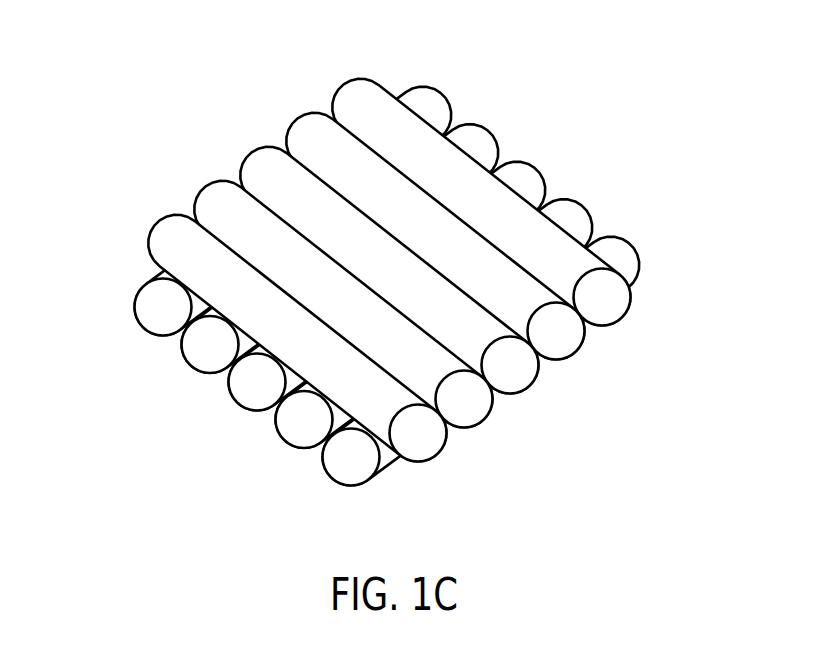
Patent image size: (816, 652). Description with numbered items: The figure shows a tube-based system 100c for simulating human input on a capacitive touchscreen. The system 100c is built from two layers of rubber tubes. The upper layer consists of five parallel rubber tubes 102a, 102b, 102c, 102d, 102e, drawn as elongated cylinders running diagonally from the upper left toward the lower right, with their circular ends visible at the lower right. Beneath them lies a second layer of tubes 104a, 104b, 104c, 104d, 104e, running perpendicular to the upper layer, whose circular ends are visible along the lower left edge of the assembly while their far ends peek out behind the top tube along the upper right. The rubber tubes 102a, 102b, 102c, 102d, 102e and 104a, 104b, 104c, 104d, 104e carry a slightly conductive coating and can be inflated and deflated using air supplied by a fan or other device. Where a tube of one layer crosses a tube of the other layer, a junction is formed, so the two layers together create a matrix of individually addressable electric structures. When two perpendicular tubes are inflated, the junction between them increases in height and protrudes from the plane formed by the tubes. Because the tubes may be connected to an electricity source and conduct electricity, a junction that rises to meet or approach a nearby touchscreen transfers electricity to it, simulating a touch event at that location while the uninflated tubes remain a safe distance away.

The tube-based system 100c is at (360, 282).
The rubber tube 102a is at (352, 80).
The rubber tube 102b is at (313, 113).
The rubber tube 102c is at (258, 148).
The rubber tube 102d is at (210, 183).
The rubber tube 102e is at (165, 217).
The rubber tube 104a is at (148, 338).
The rubber tube 104b is at (196, 375).
The rubber tube 104c is at (245, 413).
The lower layer cylinder 104d is at (292, 450).
The lower layer cylinder 104e is at (338, 487).